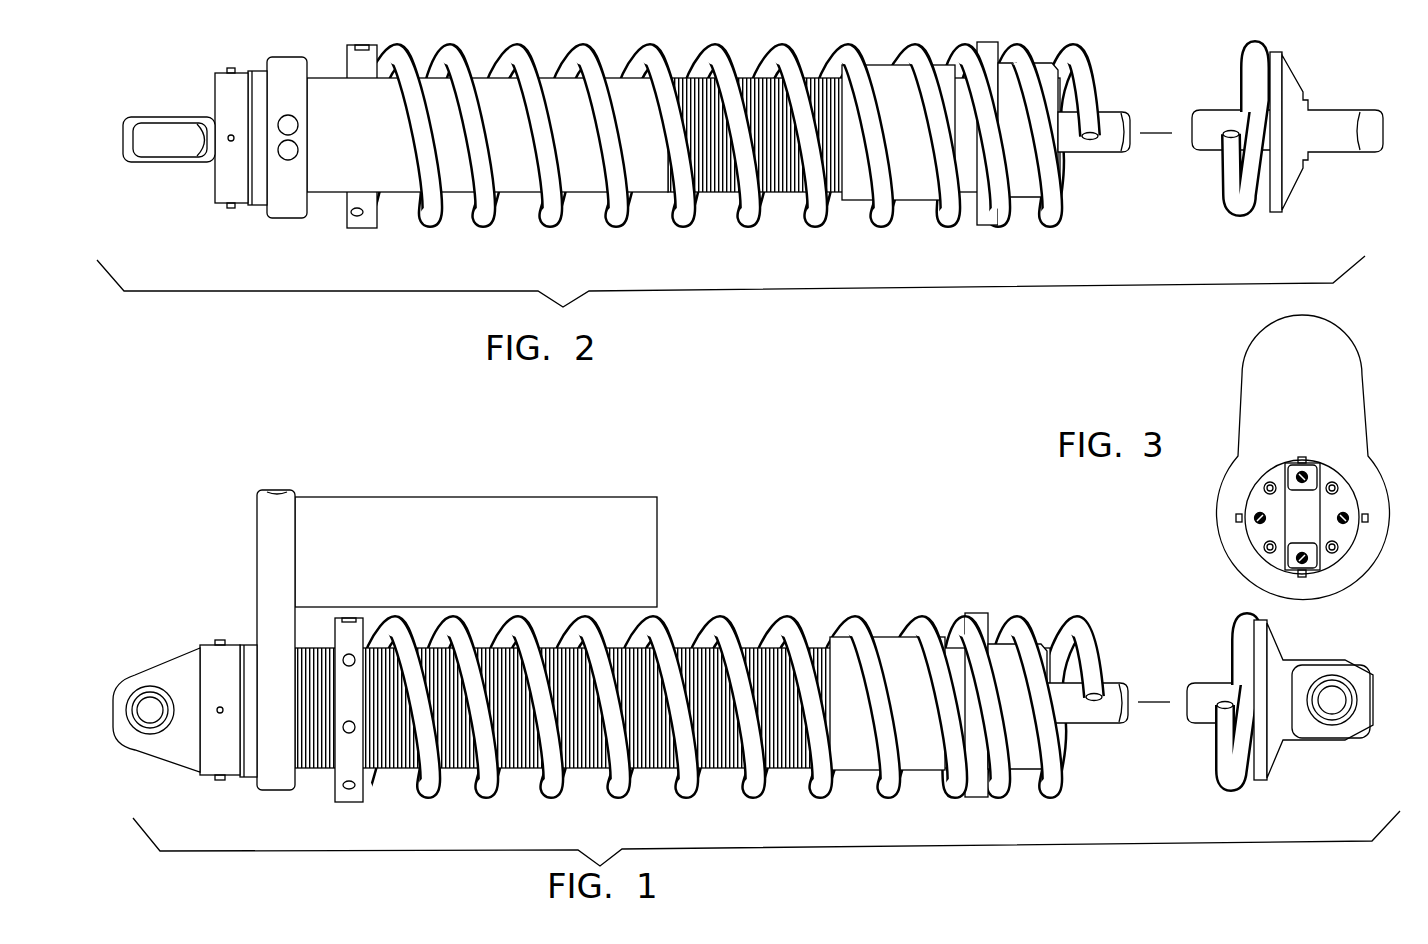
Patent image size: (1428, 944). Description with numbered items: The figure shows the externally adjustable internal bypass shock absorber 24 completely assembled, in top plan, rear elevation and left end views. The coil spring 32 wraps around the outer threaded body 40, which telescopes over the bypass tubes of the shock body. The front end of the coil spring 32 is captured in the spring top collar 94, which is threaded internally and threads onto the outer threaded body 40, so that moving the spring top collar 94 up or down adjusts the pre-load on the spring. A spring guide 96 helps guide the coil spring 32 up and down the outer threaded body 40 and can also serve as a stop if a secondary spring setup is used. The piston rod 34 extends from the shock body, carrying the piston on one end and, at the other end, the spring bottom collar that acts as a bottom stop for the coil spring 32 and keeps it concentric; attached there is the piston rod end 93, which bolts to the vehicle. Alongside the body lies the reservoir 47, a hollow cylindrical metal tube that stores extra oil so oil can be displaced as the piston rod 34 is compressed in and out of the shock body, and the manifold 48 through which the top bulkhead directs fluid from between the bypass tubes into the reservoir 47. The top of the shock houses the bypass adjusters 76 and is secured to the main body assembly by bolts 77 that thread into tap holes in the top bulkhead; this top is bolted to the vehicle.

In FIG. 2, the shock absorber 24 is at (760, 149).
In FIG. 1, the shock absorber 24 is at (743, 660).
In FIG. 2, the coil spring 32 is at (1081, 68).
In FIG. 1, the coil spring 32 is at (796, 612).
In FIG. 2, the piston rod 34 is at (1103, 118).
In FIG. 1, the piston rod 34 is at (1115, 683).
In FIG. 2, the outer threaded body 40 is at (774, 198).
In FIG. 1, the outer threaded body 40 is at (689, 643).
In FIG. 2, the reservoir 47 is at (440, 143).
In FIG. 1, the reservoir 47 is at (459, 553).
In FIG. 1, the manifold 48 is at (267, 542).
In FIG. 3, the manifold 48 is at (1286, 365).
In FIG. 3, the bypass adjusters 76 is at (1303, 472).
In FIG. 3, the bolts 77 is at (1266, 484).
In FIG. 2, the piston rod end 93 is at (1325, 122).
In FIG. 1, the spring top collar 94 is at (348, 796).
In FIG. 2, the spring guide 96 is at (887, 142).